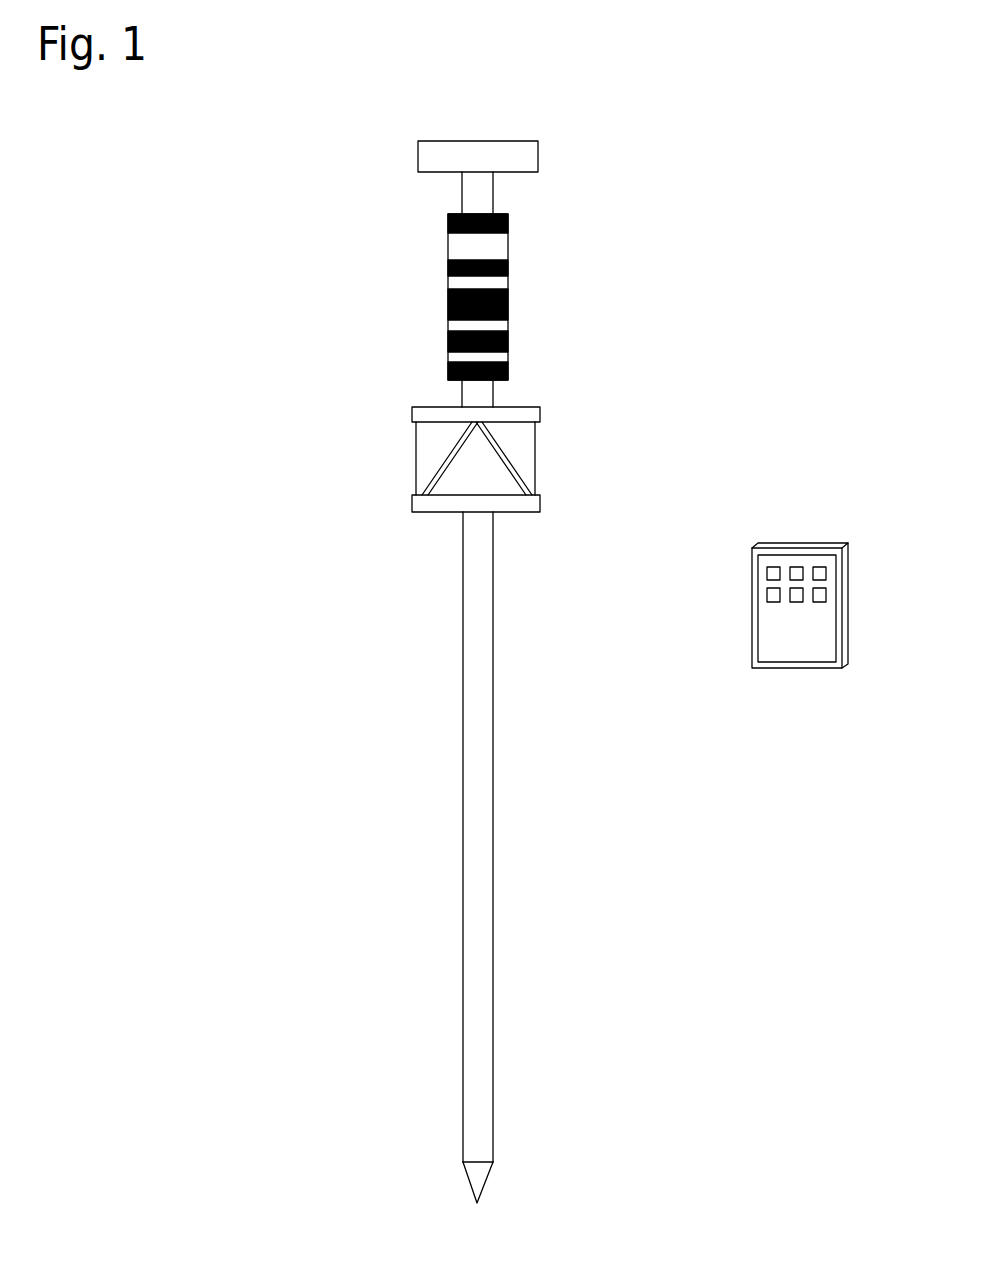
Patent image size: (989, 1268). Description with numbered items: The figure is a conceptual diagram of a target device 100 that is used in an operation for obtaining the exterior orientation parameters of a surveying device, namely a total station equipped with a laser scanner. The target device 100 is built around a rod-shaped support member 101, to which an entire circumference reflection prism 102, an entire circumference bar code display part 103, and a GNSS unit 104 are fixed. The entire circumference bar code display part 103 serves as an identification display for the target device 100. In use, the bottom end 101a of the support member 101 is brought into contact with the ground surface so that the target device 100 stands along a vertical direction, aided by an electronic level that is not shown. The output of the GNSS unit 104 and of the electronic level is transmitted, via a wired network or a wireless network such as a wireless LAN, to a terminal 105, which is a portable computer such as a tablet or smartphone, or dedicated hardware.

The target device 100 is at (474, 664).
The support member 101 is at (482, 823).
The bottom end 101a is at (487, 1180).
The entire circumference reflection prism 102 is at (535, 455).
The entire circumference bar code display part 103 is at (502, 275).
The GNSS unit 104 is at (537, 142).
The terminal 105 is at (802, 668).